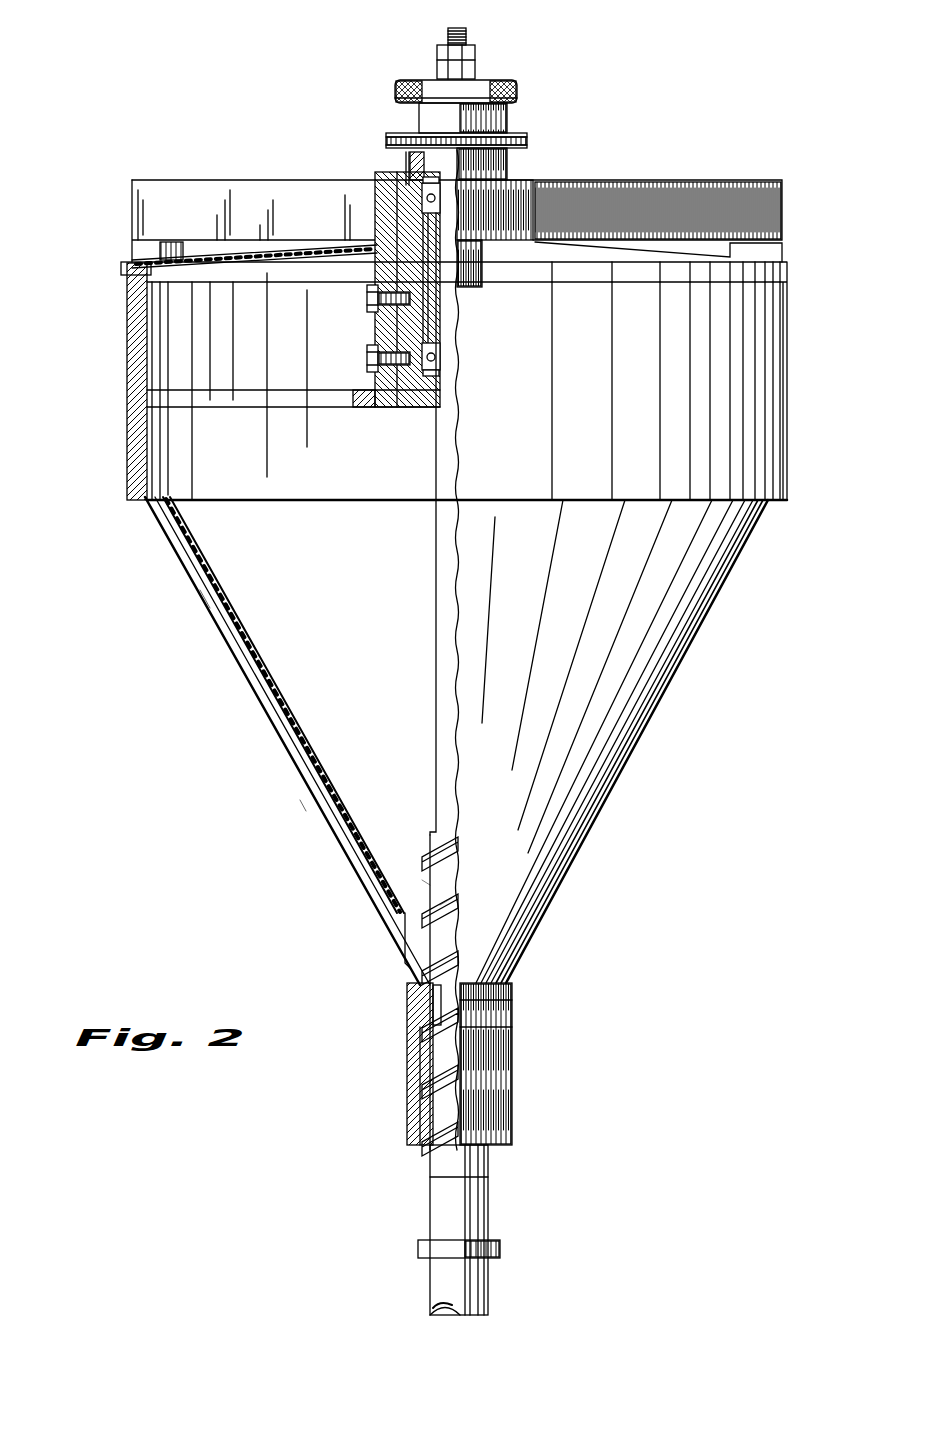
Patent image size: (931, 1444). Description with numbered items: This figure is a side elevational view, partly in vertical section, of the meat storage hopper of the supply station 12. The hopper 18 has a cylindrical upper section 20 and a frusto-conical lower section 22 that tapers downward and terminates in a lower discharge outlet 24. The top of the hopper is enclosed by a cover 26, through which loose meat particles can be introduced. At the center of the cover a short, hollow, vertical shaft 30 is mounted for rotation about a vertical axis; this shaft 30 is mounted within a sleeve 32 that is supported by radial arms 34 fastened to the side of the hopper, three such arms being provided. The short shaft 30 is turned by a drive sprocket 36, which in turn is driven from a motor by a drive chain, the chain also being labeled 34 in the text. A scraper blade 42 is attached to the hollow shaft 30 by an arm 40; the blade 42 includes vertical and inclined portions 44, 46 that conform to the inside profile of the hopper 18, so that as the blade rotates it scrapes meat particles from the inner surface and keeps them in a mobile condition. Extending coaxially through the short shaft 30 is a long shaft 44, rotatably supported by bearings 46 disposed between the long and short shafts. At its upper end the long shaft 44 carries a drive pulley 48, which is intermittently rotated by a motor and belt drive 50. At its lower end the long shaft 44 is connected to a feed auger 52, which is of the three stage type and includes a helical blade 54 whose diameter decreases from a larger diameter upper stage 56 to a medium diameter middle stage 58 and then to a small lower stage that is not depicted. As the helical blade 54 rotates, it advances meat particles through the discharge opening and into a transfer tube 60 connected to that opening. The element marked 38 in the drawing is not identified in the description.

The supply station 12 is at (296, 798).
The hopper 18 is at (231, 660).
The cylindrical upper section 20 is at (128, 375).
The frusto-conical lower section 22 is at (209, 587).
The lower discharge outlet 24 is at (407, 1076).
The cover 26 is at (285, 255).
The short hollow vertical shaft 30 is at (395, 215).
The sleeve 32 is at (378, 245).
The radial arms 34 is at (205, 195).
The drive sprocket 36 is at (528, 142).
The bolt 38 is at (410, 140).
The arm 40 is at (330, 405).
The scraper blade 42 is at (207, 567).
The long shaft 44 is at (170, 448).
The bearings 46 is at (436, 200).
The drive pulley 48 is at (498, 88).
The belt drive 50 is at (408, 88).
The feed auger 52 is at (422, 853).
The helical blade 54 is at (450, 905).
The larger diameter upper stage 56 is at (423, 890).
The medium diameter middle stage 58 is at (435, 1003).
The transfer tube 60 is at (490, 1203).